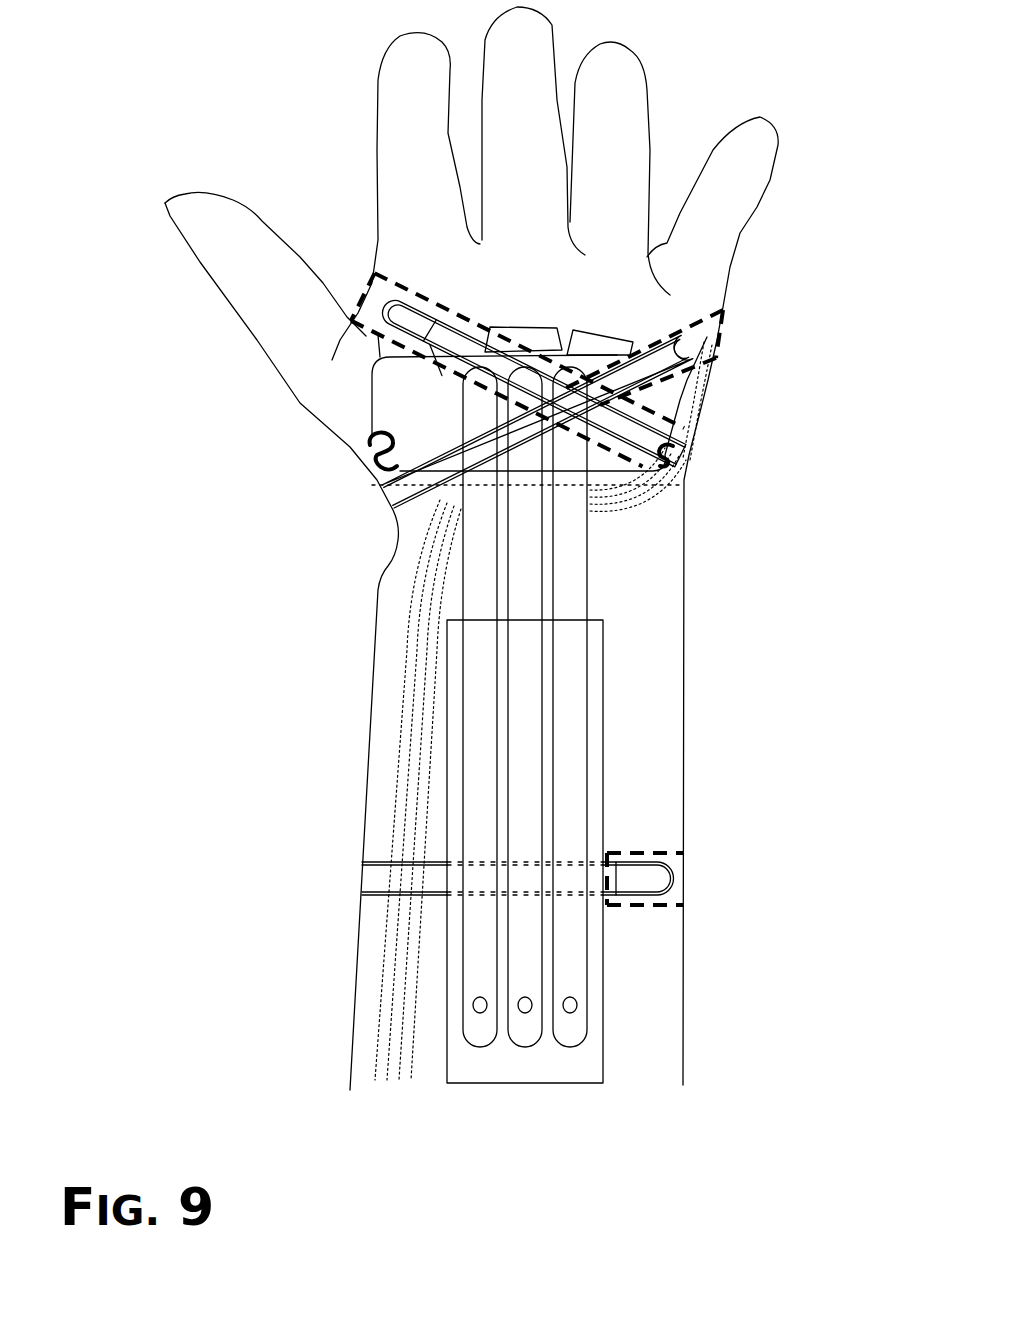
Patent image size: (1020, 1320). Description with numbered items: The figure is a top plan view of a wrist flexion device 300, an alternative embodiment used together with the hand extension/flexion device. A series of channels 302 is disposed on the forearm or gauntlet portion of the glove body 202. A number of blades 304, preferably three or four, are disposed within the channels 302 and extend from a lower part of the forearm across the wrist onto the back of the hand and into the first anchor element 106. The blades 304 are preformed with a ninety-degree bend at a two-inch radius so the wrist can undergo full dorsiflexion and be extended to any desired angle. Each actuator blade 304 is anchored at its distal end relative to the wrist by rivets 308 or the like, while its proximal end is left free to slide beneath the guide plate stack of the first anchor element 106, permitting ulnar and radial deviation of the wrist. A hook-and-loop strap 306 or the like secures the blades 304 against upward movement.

The first anchor element 106 is at (395, 413).
The wrist flexion device 300 is at (532, 721).
The channels 302 is at (562, 1073).
The blades 304 is at (587, 570).
The strap 306 is at (378, 866).
The glove body 202 is at (411, 727).
The rivets 308 is at (478, 1010).